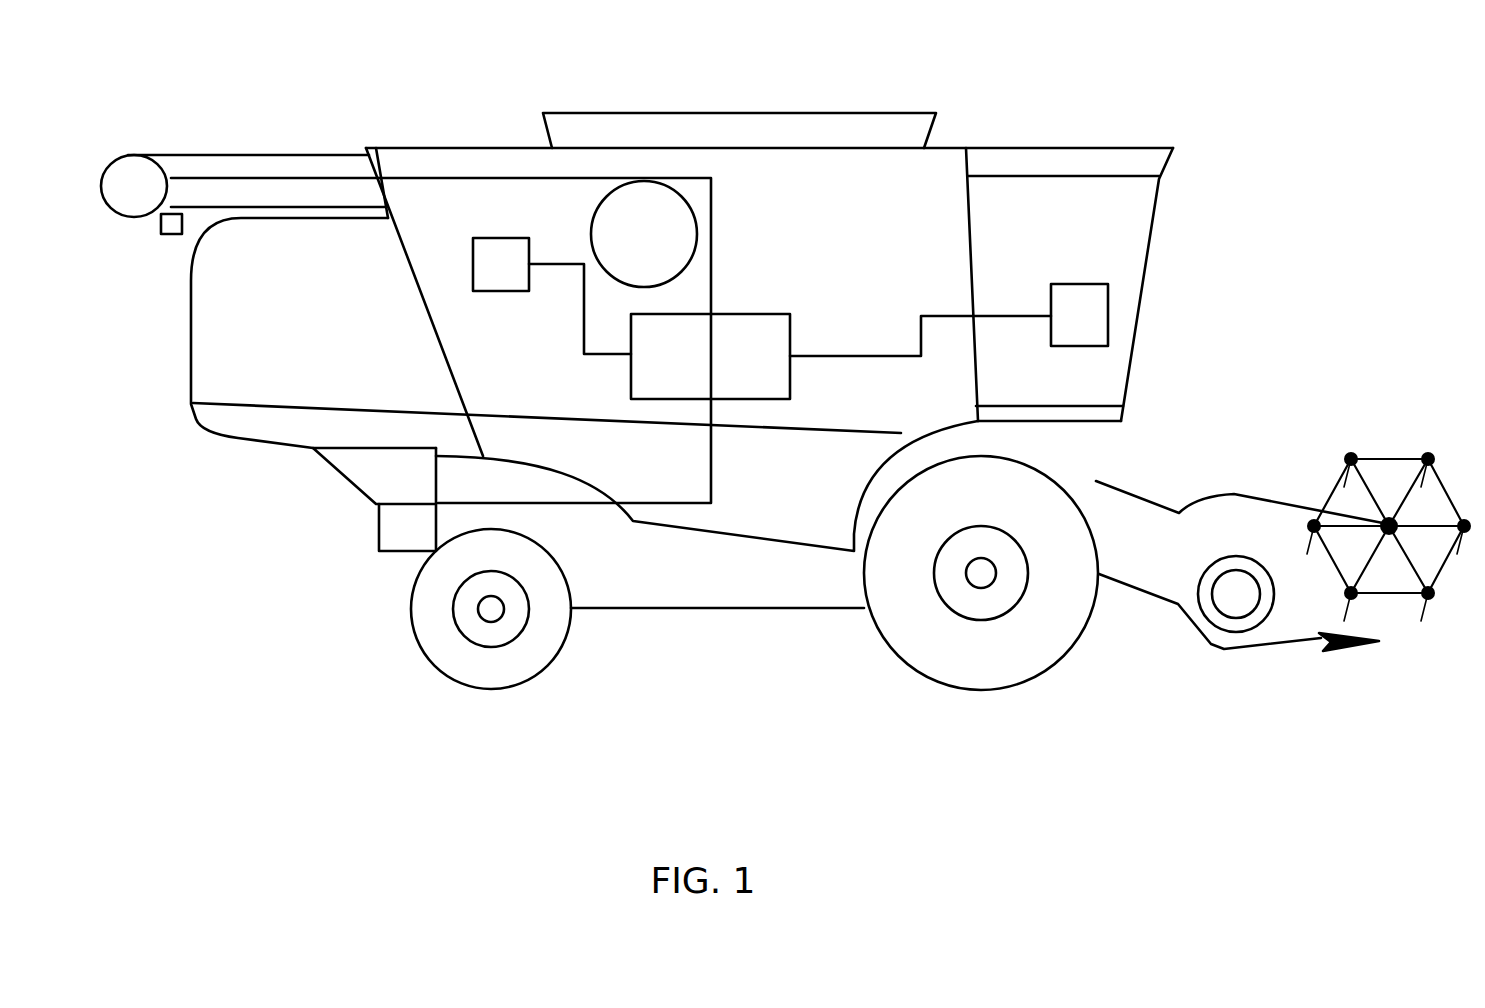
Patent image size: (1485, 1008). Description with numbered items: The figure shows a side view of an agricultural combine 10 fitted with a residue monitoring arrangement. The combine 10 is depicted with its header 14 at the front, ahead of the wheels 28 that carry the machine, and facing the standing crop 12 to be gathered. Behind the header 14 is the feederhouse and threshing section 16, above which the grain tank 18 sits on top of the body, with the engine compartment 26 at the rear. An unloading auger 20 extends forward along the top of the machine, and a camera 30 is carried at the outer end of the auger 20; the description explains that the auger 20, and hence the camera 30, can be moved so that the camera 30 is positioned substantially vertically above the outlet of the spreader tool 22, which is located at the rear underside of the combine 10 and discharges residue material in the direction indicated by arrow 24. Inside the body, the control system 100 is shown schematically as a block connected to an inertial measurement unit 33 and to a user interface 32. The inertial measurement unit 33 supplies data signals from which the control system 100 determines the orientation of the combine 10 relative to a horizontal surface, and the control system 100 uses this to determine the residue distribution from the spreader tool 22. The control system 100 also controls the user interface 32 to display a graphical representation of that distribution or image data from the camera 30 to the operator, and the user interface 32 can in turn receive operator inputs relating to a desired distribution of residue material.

The combine 10 is at (1242, 111).
The crop material / field 12 is at (1372, 622).
The header 14 is at (1160, 598).
The feederhouse / threshing section 16 is at (753, 518).
The grain tank 18 is at (746, 110).
The auger 20 is at (265, 180).
The spreader tool 22 is at (405, 552).
The direction of residue discharge 24 is at (347, 548).
The engine compartment 26 is at (1107, 213).
The wheels 28 is at (492, 643).
The camera 30 is at (171, 212).
The user interface 32 is at (1108, 315).
The inertial measurement unit 33 is at (486, 278).
The control system 100 is at (686, 370).